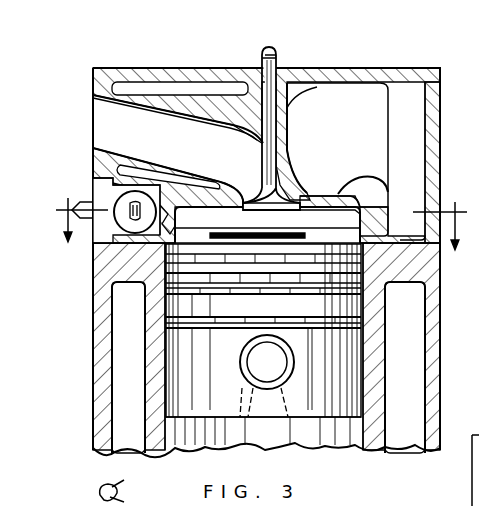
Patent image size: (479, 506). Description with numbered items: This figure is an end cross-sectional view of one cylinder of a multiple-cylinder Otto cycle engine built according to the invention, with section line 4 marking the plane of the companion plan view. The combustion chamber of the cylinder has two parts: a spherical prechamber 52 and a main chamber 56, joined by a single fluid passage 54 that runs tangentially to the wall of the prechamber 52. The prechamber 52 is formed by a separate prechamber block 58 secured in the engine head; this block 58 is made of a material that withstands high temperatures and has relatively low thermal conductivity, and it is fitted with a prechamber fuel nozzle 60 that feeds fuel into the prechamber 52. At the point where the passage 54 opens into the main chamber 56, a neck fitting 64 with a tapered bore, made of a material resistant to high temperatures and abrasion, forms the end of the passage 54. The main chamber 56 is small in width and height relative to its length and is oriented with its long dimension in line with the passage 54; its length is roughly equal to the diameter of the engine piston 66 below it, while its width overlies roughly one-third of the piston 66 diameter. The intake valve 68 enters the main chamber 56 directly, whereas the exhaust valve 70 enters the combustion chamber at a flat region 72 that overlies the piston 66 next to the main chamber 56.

The section line 4- 4 is at (261, 213).
The spherical prechamber 52 is at (138, 293).
The fluid passage 54 is at (129, 348).
The main chamber 56 is at (348, 229).
The prechamber block 58 is at (92, 220).
The prechamber fuel nozzle 60 is at (93, 190).
The neck fitting 64 is at (188, 186).
The engine piston 66 is at (280, 314).
The intake valve 68 is at (280, 58).
The exhaust valve 70 is at (306, 215).
The flat region 72 is at (247, 241).